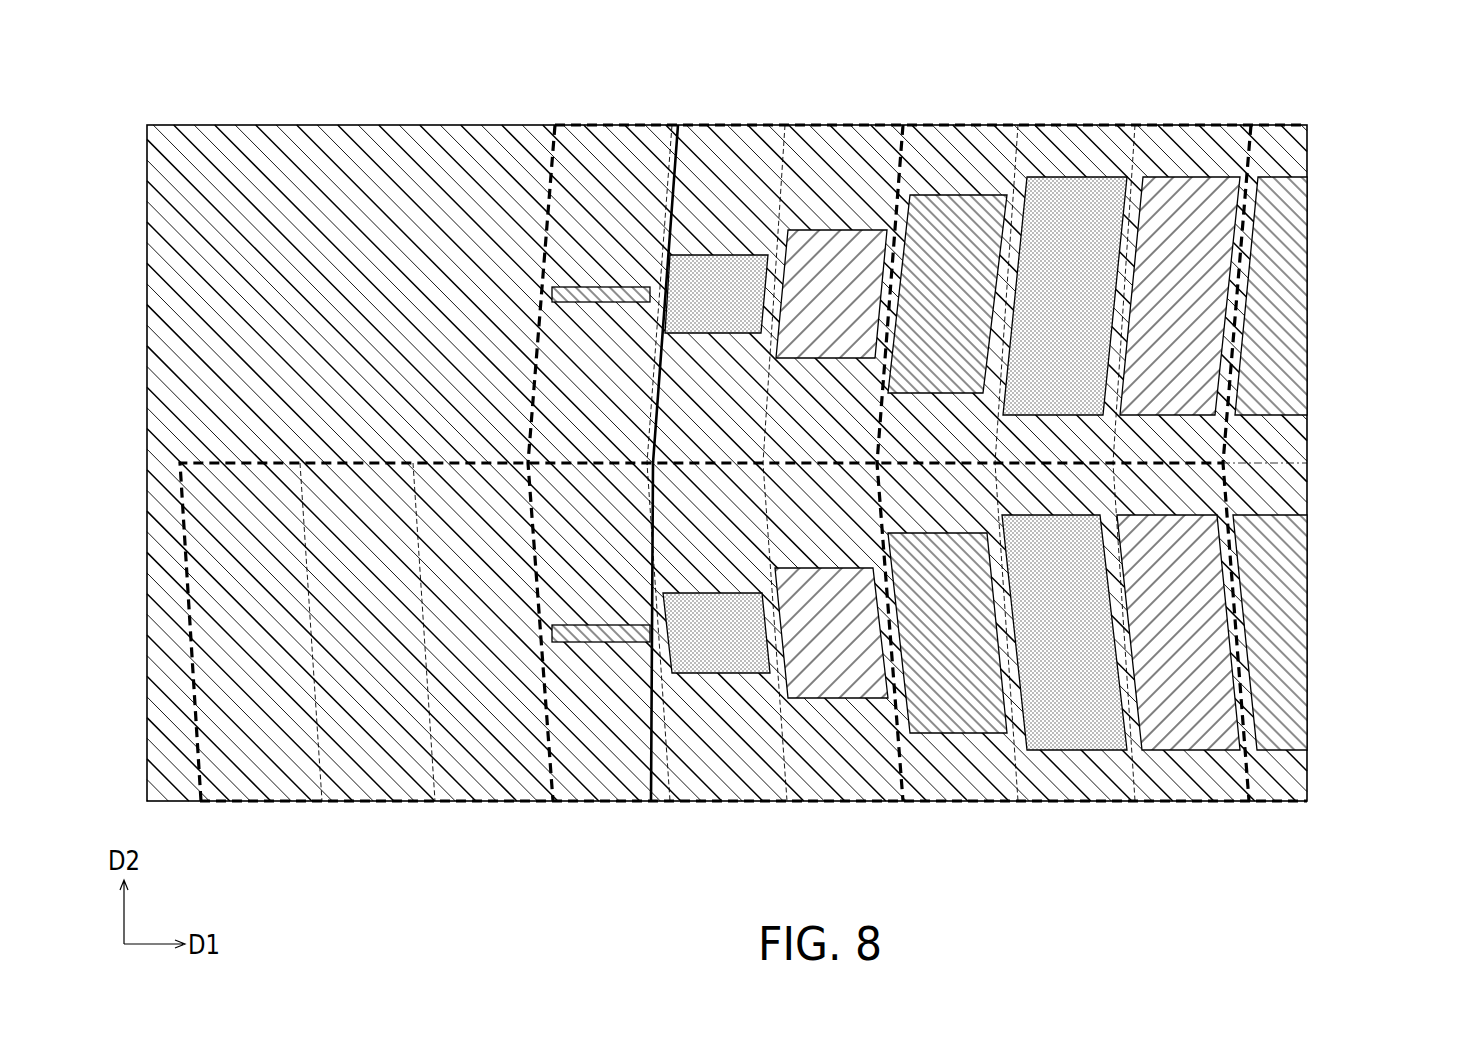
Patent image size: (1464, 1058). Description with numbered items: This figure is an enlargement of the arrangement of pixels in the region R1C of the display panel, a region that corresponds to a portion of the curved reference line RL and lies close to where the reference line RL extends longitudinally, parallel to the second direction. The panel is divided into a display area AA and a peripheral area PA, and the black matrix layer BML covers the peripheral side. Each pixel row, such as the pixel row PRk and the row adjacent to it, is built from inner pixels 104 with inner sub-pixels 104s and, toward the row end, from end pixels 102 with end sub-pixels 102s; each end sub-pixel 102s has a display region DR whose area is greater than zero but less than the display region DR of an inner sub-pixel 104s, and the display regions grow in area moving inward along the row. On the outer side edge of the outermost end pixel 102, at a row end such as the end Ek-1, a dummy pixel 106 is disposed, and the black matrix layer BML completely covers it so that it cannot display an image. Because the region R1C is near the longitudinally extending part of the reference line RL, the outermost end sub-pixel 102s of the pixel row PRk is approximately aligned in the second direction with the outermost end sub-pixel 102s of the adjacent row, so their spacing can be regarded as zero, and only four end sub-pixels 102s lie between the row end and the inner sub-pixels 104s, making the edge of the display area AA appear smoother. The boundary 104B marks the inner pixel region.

The end pixel 102 is at (727, 805).
The end sub-pixel 102s is at (612, 148).
The inner pixel 104 is at (1282, 503).
The boundary of display layer 104B is at (1283, 778).
The inner sub-pixel 104s is at (1077, 803).
The dummy pixel 106 is at (385, 803).
The peripheral area PA is at (219, 113).
The black matrix layer BML is at (370, 145).
The reference line RL is at (682, 150).
The display region DR is at (843, 240).
The display area AA is at (1280, 115).
The region R1C is at (1359, 109).
The pixel row PRk is at (1336, 278).
The end Ek-1 is at (196, 655).